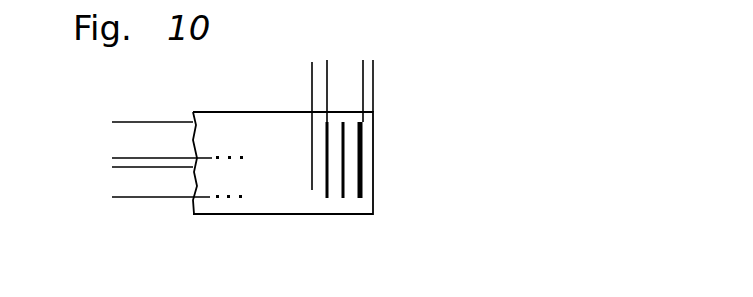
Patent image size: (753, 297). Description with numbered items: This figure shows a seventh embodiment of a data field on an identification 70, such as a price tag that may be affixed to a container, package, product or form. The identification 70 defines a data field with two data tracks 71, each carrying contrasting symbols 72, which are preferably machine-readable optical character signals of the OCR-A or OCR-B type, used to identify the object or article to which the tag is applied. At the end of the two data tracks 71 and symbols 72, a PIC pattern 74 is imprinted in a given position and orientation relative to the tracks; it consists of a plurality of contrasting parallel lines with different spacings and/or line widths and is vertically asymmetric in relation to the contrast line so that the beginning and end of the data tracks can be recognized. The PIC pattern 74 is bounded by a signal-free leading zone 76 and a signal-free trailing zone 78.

The identification 70 is at (298, 217).
The data track 71 is at (136, 155).
The contrasting symbols 72 is at (253, 118).
The PIC pattern 74 is at (366, 131).
The signal-free leading zone 76 is at (318, 73).
The signal-free trailing zone 78 is at (367, 73).